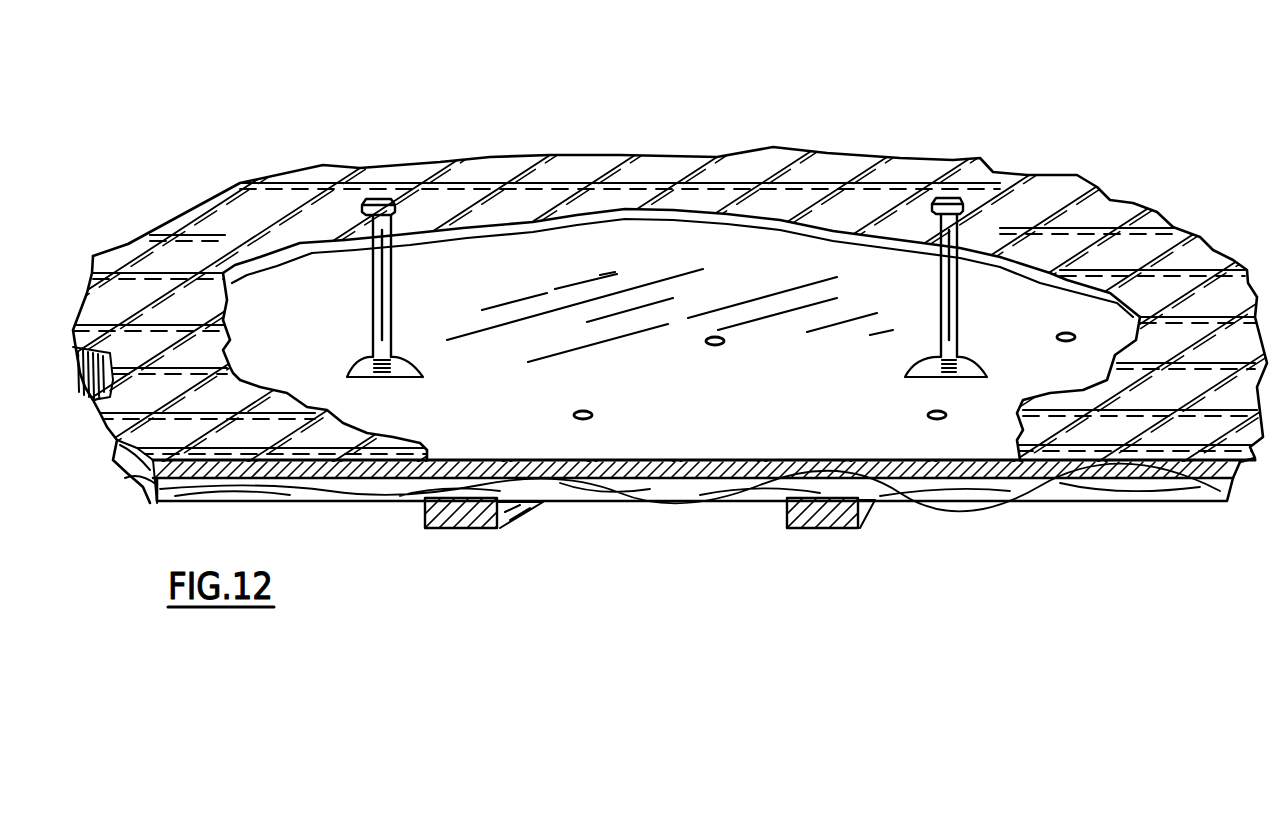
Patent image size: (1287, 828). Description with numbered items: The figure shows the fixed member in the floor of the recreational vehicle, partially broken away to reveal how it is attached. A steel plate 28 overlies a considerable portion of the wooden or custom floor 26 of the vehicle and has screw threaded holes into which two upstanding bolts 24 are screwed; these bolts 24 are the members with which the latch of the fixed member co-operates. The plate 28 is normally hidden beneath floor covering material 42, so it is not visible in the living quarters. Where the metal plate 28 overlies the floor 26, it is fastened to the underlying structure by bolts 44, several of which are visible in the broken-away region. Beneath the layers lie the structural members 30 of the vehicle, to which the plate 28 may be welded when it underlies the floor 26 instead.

The bolt 24 is at (388, 268).
The floor 26 is at (570, 494).
The plate 28 is at (665, 478).
The structural members 30 is at (458, 530).
The floor covering material 42 is at (297, 418).
The bolts 44 is at (712, 335).